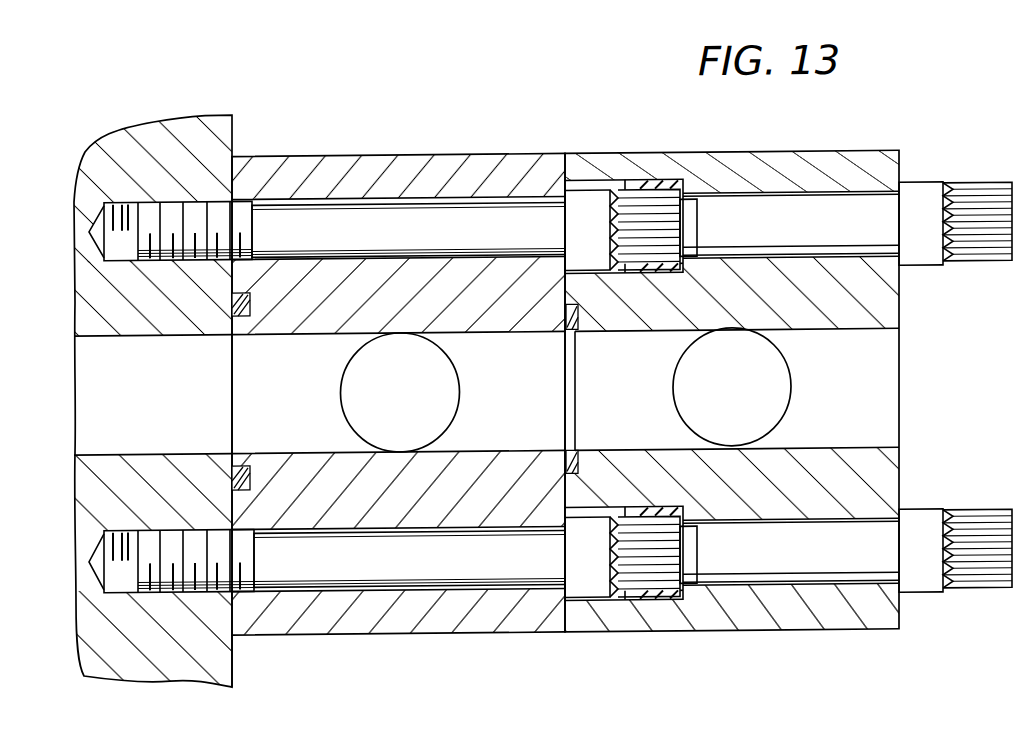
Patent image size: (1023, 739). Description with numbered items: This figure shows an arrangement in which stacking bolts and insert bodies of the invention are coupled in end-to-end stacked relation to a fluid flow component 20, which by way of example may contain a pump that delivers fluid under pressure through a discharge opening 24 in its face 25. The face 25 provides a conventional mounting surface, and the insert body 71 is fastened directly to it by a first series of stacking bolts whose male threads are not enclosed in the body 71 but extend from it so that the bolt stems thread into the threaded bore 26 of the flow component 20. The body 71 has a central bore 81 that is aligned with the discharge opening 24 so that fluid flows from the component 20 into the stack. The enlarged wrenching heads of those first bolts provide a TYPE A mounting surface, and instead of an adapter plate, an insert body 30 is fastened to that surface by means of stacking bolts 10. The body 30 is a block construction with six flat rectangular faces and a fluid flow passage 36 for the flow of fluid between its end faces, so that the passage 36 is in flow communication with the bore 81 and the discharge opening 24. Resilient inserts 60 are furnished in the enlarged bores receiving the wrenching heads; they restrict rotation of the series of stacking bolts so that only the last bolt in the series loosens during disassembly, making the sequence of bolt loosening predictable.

The fluid flow component 20 is at (186, 126).
The discharge opening 24 is at (118, 336).
The face 25 is at (237, 666).
The threaded bore 26 is at (171, 205).
The insert body 71 is at (328, 156).
The central bore 81 is at (272, 337).
The body 30 is at (732, 156).
The fluid flow passage 36 is at (614, 337).
The resilient insert 60 is at (648, 182).
The stacking bolt 10 is at (827, 197).